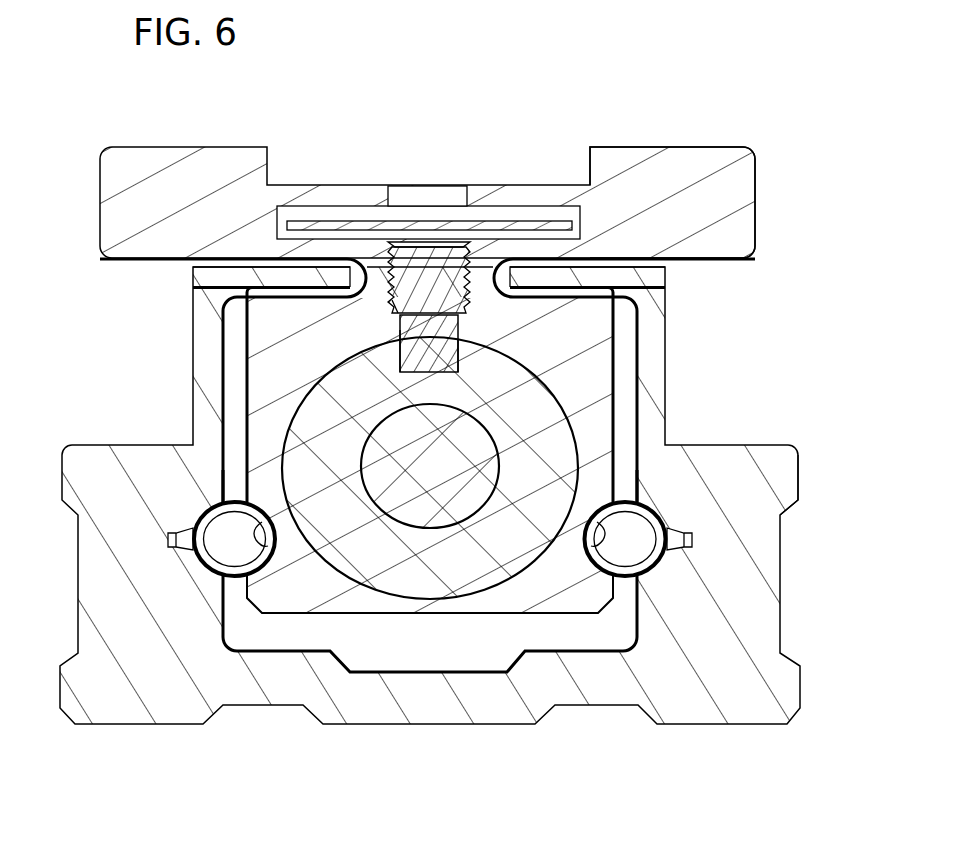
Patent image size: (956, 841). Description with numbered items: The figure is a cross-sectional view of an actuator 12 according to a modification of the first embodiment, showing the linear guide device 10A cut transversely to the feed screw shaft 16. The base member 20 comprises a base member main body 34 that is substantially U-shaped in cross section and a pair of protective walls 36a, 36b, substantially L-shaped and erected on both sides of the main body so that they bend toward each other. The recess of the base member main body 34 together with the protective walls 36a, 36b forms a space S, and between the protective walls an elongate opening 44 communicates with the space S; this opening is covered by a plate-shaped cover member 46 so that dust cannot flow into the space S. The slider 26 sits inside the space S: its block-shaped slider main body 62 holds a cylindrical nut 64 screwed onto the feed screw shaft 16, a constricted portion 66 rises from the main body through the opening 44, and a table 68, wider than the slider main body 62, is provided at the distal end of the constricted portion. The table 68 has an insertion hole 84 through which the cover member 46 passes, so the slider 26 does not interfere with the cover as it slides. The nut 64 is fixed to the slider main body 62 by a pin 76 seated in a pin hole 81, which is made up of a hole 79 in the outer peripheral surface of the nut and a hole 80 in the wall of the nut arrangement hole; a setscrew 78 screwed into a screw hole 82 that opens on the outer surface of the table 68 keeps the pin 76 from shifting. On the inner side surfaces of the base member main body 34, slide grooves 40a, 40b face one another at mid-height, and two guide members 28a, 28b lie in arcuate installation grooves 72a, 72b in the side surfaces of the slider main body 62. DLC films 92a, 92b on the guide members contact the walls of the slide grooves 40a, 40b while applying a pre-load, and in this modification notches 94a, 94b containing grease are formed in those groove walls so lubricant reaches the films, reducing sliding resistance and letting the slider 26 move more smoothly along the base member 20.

The linear guide device 10A is at (736, 104).
The actuator 12 is at (369, 85).
The feed screw shaft 16 is at (470, 457).
The base member 20 is at (770, 705).
The slider 26 is at (747, 155).
The guide member 28a is at (657, 517).
The guide member 28b is at (197, 523).
The base member main body 34 is at (770, 570).
The protective wall 36a is at (650, 417).
The protective wall 36b is at (207, 417).
The slide groove 40a is at (650, 567).
The slide groove 40b is at (213, 568).
The opening 44 is at (497, 273).
The cover member 46 is at (554, 227).
The slider main body 62 is at (295, 600).
The nut 64 is at (493, 573).
The constricted portion 66 is at (475, 277).
The table 68 is at (737, 192).
The installation groove 72a is at (594, 530).
The installation groove 72b is at (267, 522).
The pin 76 is at (427, 358).
The setscrew 78 is at (413, 263).
The hole 79 is at (458, 356).
The hole 80 is at (458, 333).
The pin hole 81 is at (586, 342).
The screw hole 82 is at (397, 303).
The insertion hole 84 is at (313, 222).
The DLC film 92a is at (686, 533).
The DLC film 92b is at (170, 533).
The notch 94a is at (688, 535).
The notch 94b is at (172, 535).
The space S is at (433, 653).